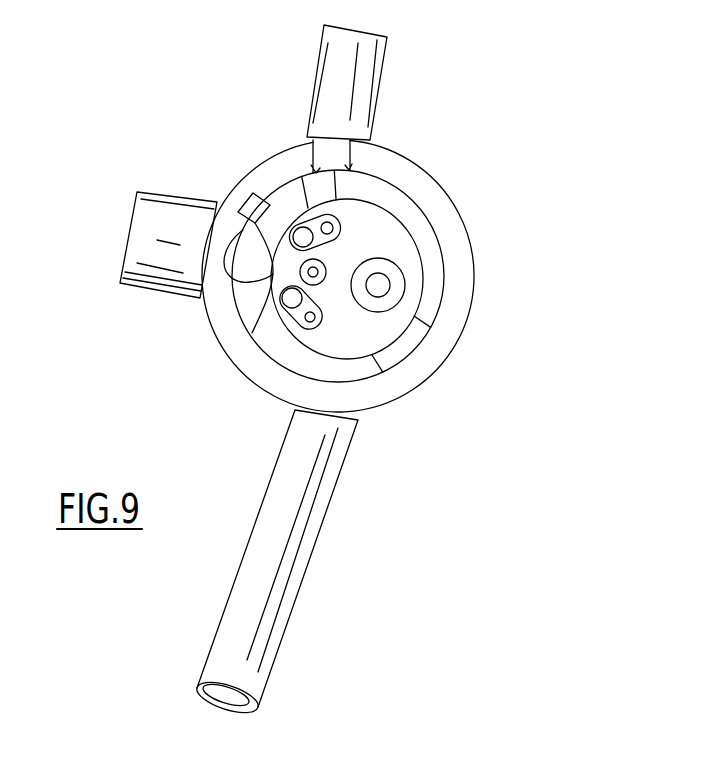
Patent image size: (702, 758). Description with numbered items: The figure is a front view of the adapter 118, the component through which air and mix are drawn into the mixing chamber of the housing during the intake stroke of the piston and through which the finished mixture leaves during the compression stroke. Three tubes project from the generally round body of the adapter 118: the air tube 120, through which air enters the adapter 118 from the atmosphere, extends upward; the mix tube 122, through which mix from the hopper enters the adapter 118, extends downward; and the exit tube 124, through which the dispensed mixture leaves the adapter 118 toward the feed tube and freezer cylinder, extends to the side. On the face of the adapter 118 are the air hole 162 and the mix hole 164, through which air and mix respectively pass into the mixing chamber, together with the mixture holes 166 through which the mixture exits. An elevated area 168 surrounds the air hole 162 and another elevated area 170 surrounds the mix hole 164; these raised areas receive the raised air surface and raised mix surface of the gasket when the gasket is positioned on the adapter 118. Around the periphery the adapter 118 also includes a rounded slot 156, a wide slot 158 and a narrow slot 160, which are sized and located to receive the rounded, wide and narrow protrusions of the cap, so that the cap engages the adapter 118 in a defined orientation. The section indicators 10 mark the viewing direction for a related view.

The section line / viewing direction 10 is at (62, 228).
The adapter 118 is at (530, 134).
The air tube 120 is at (380, 82).
The mix tube 122 is at (308, 563).
The exit tube 124 is at (157, 192).
The rounded slot 156 is at (231, 283).
The wide slot 158 is at (270, 196).
The narrow slot 160 is at (405, 360).
The air hole 162 is at (325, 268).
The mix hole 164 is at (391, 283).
The mixture holes 166 is at (322, 227).
The elevated area 168 is at (287, 328).
The elevated area 170 is at (403, 268).